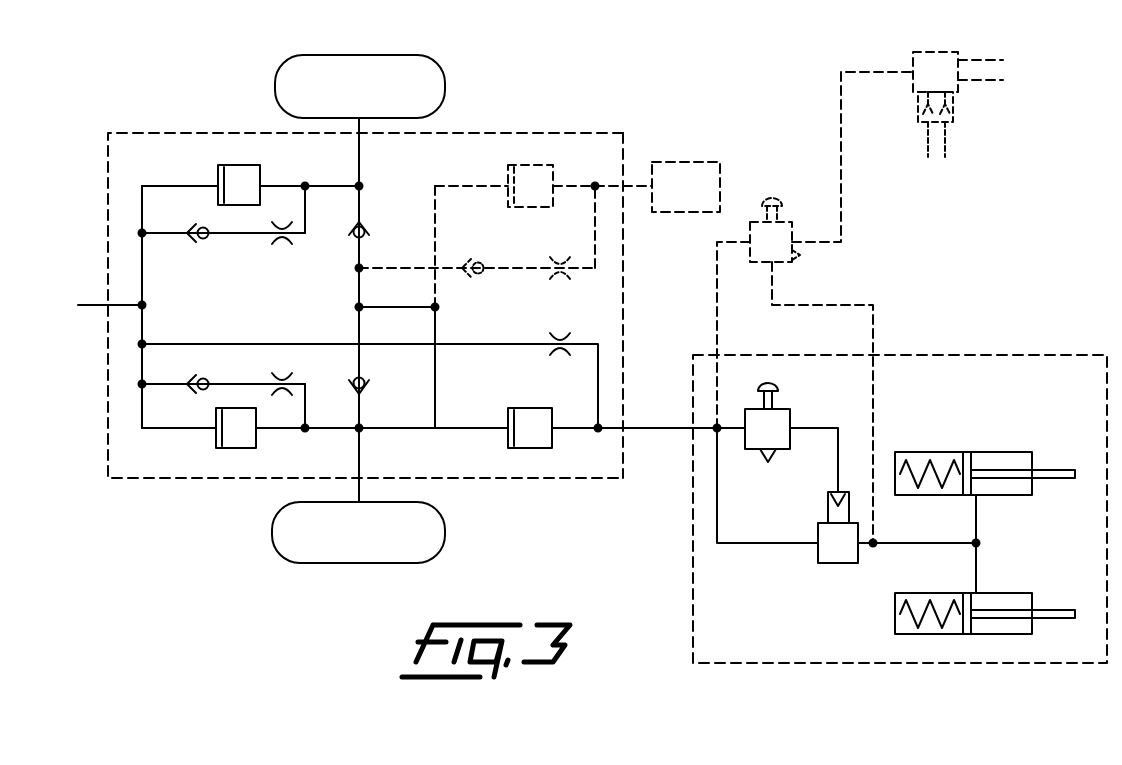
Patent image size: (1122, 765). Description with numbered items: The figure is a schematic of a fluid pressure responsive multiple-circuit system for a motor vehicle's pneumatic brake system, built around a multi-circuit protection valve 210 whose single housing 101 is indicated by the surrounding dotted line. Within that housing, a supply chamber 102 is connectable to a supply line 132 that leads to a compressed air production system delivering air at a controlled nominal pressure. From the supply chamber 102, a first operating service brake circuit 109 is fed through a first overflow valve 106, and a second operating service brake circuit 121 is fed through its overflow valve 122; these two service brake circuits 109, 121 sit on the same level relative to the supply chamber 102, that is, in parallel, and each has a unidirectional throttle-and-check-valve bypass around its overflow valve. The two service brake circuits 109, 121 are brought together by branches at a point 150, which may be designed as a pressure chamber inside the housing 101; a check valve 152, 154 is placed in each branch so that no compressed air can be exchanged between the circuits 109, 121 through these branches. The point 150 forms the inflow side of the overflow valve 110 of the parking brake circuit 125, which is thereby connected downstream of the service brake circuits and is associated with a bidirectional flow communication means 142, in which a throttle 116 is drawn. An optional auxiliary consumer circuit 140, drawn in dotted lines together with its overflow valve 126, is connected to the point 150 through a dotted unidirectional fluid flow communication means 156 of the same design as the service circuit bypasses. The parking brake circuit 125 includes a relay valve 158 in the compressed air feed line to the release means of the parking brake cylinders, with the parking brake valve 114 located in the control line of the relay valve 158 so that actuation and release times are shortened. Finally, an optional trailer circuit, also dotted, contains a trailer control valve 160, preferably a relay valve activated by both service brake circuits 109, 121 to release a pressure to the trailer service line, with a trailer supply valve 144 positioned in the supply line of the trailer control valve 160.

The housing 101 is at (574, 134).
The supply chamber 102 is at (142, 366).
The first overflow valve 106 is at (258, 445).
The first operating service brake circuit 109 is at (328, 563).
The overflow valve 110 is at (552, 445).
The parking brake valve 114 is at (778, 420).
The orifice 116 is at (560, 338).
The second operating service brake circuit 121 is at (328, 55).
The overflow valve 122 is at (244, 178).
The parking brake circuit 125 is at (947, 347).
The overflow valve 126 is at (534, 168).
The supply line 132 is at (94, 308).
The auxiliary consumer circuit 140 is at (701, 154).
The bidirectional flow communication means 142 is at (216, 342).
The trailer supply valve 144 is at (782, 260).
The point 150 is at (355, 307).
The check valve 152 is at (364, 386).
The check valve 154 is at (365, 236).
The unidirectional fluid flow communication means 156 is at (383, 270).
The relay valve 158 is at (828, 563).
The trailer control valve 160 is at (922, 58).
The multi-circuit protection valve 210 is at (180, 124).